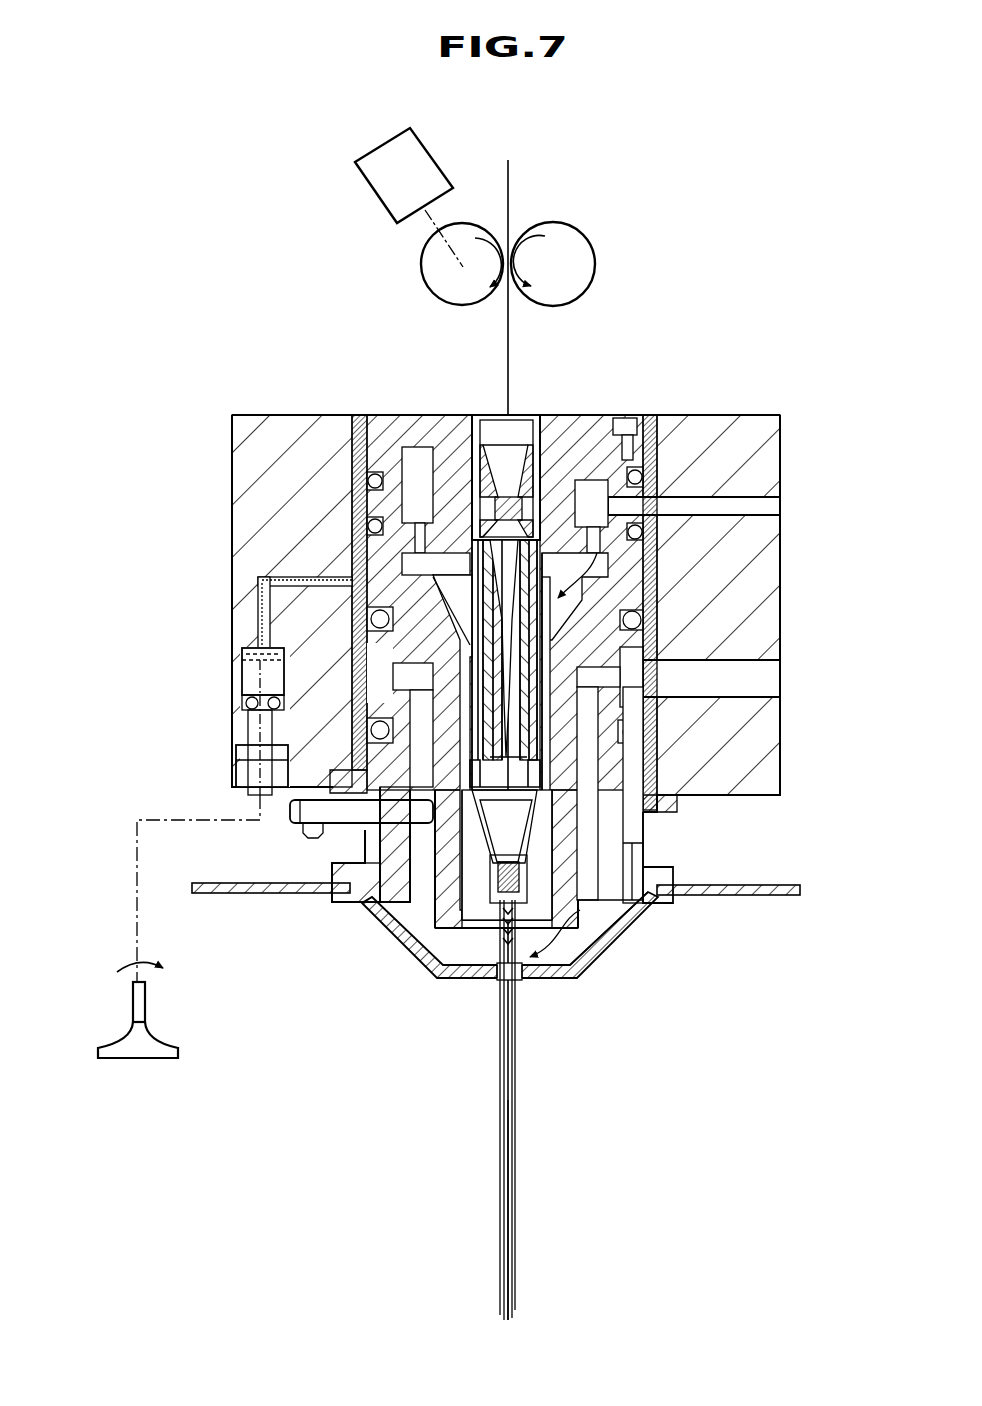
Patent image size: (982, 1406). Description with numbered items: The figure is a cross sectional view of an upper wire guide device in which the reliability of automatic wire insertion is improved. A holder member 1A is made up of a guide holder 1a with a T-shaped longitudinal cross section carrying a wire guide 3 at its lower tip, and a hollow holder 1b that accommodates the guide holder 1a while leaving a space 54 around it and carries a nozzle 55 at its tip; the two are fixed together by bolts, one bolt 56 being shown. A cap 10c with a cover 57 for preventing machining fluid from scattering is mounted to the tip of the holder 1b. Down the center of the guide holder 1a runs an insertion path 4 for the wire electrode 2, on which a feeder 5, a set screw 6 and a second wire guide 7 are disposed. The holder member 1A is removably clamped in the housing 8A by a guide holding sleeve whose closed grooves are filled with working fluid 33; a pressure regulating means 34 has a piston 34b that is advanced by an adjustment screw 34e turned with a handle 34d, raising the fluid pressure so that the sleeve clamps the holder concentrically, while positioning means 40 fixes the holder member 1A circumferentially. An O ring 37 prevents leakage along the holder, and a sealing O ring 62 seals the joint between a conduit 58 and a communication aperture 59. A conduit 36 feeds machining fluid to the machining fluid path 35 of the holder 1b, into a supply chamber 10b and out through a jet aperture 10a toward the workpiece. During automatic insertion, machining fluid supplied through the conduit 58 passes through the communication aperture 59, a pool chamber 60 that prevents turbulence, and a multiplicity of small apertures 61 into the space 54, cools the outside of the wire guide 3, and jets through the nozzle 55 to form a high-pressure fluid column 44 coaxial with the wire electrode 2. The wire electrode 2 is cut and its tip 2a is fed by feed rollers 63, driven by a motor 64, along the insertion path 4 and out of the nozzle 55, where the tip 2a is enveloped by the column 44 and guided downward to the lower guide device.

The wire electrode 2 is at (512, 195).
The tip of the wire electrode 2a is at (510, 1218).
The holder member 1A is at (438, 415).
The guide holder 1a is at (382, 905).
The hollow holder 1b is at (595, 912).
The wire guide 3 is at (415, 940).
The insertion path 4 is at (515, 812).
The feeder 5 is at (487, 663).
The set screw 6 is at (535, 415).
The second wire guide 7 is at (572, 418).
The housing 8A is at (783, 592).
The jet aperture 10a is at (522, 984).
The supply chamber 10b is at (437, 980).
The cap 10c is at (585, 968).
The working fluid 33 is at (353, 557).
The pressure regulating means 34 is at (215, 720).
The piston 34b is at (255, 678).
The handle 34d is at (165, 1045).
The adjustment screw 34e is at (250, 780).
The machining fluid path 35 is at (588, 862).
The conduit 36 is at (783, 686).
The O ring 37 is at (627, 620).
The positioning means 40 is at (315, 840).
The fluid column 44 is at (514, 1128).
The space 54 is at (553, 603).
The nozzle 55 is at (499, 925).
The bolt 56 is at (628, 418).
The cover 57 is at (745, 895).
The conduit 58 is at (780, 510).
The communication aperture 59 is at (650, 495).
The pool chamber 60 is at (590, 418).
The small apertures 61 is at (672, 497).
The sealing O ring 62 is at (366, 458).
The wire electrode feed roller 63 is at (422, 275).
The motor 64 is at (383, 185).